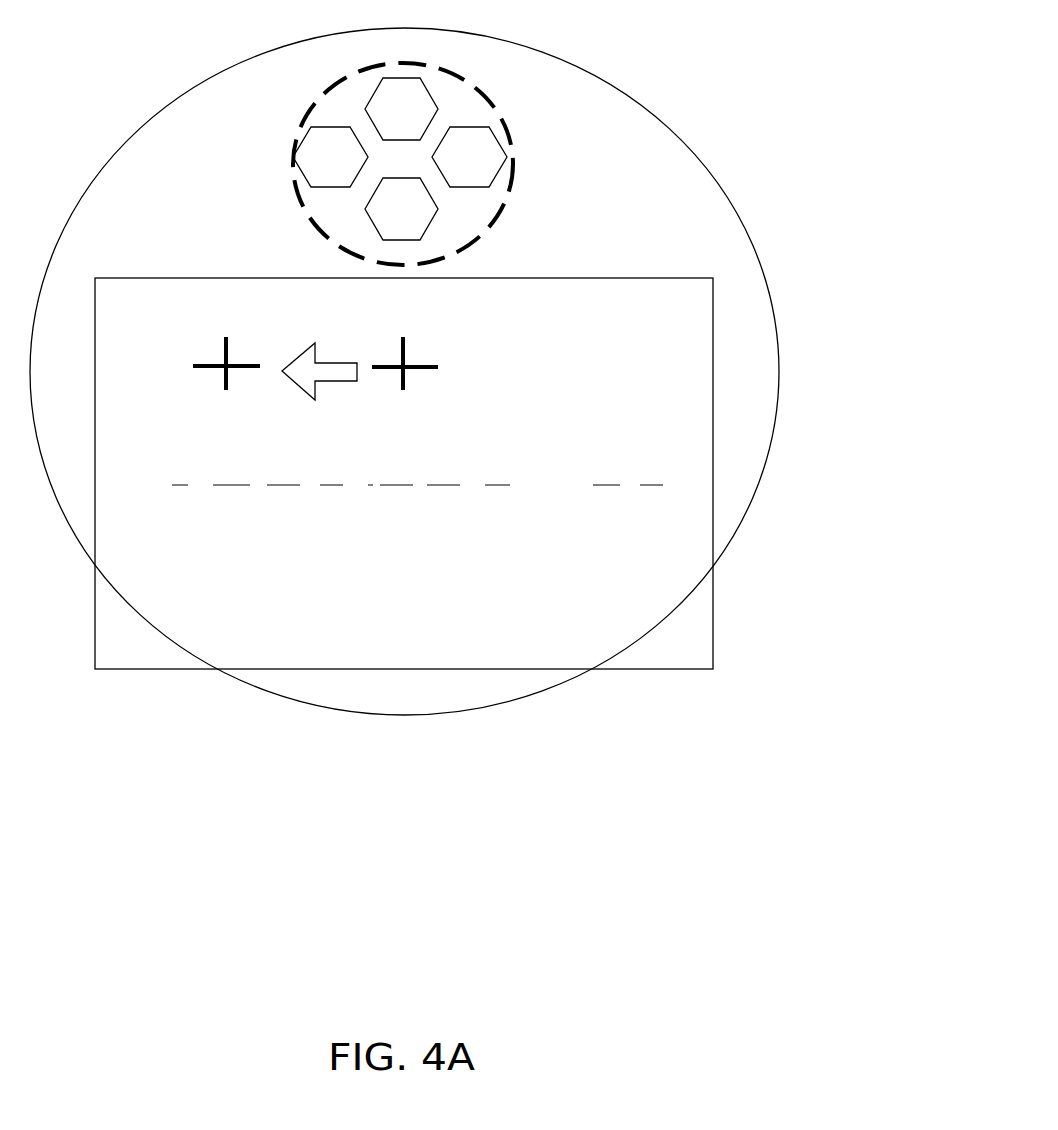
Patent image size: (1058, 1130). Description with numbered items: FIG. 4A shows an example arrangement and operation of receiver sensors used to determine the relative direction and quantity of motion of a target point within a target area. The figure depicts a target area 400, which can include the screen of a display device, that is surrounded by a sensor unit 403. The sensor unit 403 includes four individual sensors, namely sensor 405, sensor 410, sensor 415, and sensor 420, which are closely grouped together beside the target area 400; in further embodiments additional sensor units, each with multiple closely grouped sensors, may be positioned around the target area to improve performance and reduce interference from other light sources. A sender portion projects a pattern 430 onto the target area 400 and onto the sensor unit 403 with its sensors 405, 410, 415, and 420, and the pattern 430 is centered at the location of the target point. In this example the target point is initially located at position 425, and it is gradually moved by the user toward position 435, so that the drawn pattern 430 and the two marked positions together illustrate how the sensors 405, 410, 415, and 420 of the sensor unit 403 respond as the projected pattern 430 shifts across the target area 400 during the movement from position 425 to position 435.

The target area 400 is at (404, 473).
The sensor unit 403 is at (510, 185).
The sensor 405 is at (401, 209).
The sensor 410 is at (469, 157).
The sensor 415 is at (401, 109).
The sensor 420 is at (330, 157).
The position 425 is at (412, 363).
The pattern 430 is at (640, 100).
The position 435 is at (207, 380).